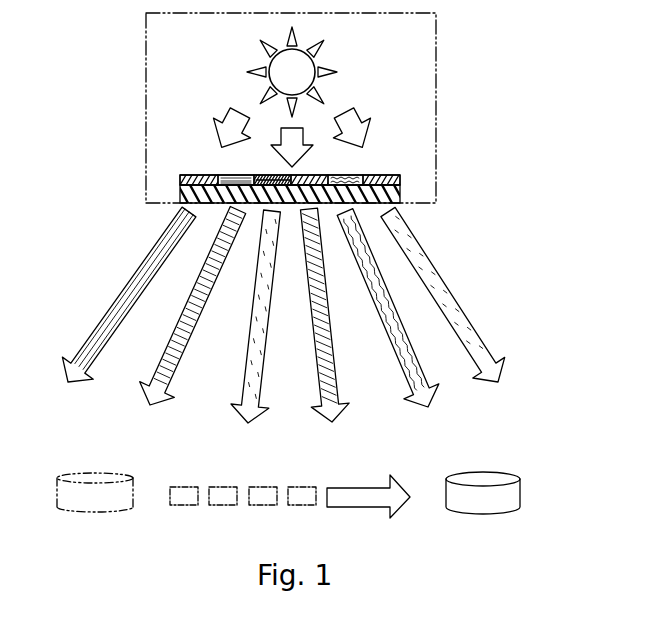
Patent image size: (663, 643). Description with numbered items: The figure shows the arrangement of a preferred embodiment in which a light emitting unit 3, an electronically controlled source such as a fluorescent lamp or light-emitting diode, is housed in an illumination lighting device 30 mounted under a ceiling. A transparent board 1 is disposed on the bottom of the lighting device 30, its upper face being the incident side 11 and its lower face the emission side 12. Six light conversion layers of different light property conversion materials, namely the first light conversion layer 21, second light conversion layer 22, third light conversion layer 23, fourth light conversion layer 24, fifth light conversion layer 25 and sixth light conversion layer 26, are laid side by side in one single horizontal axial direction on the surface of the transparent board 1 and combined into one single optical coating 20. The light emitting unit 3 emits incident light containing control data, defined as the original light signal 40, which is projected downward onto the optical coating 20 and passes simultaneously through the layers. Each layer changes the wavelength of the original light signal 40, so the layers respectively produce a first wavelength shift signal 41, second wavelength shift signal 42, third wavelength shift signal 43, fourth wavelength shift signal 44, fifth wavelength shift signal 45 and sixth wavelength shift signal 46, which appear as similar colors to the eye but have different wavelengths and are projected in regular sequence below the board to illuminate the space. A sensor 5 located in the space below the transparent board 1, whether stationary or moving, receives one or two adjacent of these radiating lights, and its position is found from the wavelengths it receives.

The transparent board 1 is at (402, 191).
The light emitting unit 3 is at (318, 58).
The sensor 5 is at (513, 495).
The incident side 11 is at (328, 124).
The emission side 12 is at (283, 315).
The optical coating 20 is at (267, 168).
The first light conversion layer 21 is at (198, 175).
The second light conversion layer 22 is at (233, 174).
The third light conversion layer 23 is at (277, 174).
The fourth light conversion layer 24 is at (303, 174).
The fifth light conversion layer 25 is at (350, 173).
The sixth light conversion layer 26 is at (388, 173).
The illumination lighting device 30 is at (436, 60).
The original light signal 40 is at (226, 113).
The first wavelength shift signal 41 is at (122, 297).
The second wavelength shift signal 42 is at (165, 345).
The third wavelength shift signal 43 is at (243, 349).
The fourth wavelength shift signal 44 is at (335, 348).
The fifth wavelength shift signal 45 is at (413, 343).
The sixth wavelength shift signal 46 is at (460, 297).